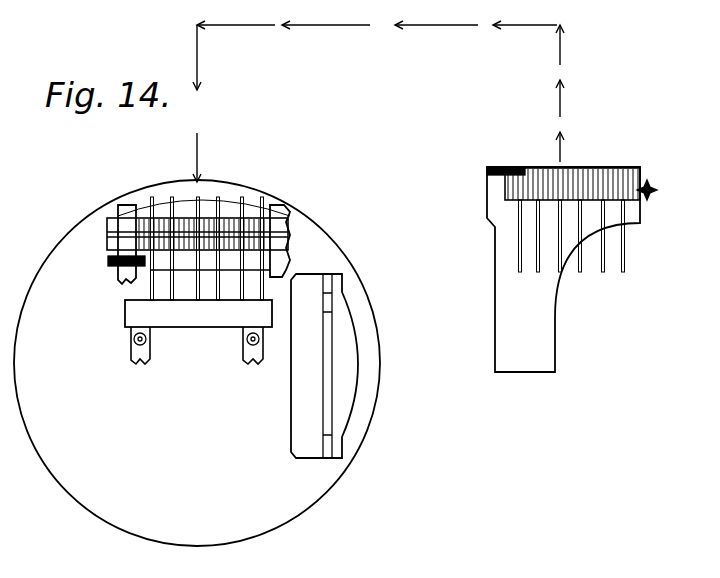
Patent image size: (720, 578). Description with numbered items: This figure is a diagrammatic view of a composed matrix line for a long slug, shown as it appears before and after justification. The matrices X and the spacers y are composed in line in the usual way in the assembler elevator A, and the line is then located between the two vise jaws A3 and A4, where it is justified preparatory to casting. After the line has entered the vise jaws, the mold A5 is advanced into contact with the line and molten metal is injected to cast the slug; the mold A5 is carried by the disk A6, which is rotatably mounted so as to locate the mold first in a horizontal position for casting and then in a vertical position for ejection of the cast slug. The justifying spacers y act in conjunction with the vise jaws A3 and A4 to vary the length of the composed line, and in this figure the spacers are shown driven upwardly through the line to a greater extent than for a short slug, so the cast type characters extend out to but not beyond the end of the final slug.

The assembler elevator A is at (592, 305).
The vise jaw A3 is at (135, 212).
The vise jaw A4 is at (284, 214).
The mold A5 is at (300, 405).
The disk A6 is at (160, 468).
The matrices X is at (250, 222).
The spacers y is at (155, 285).